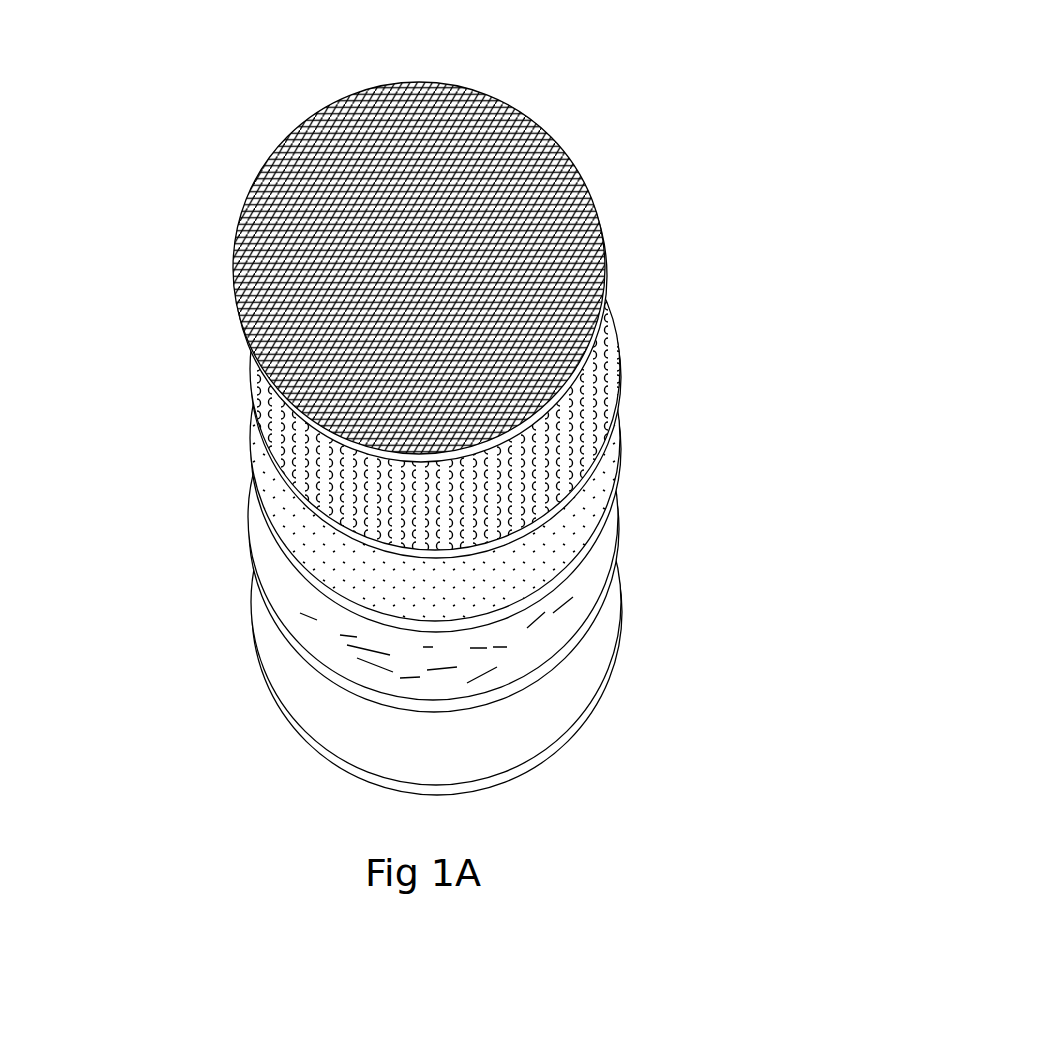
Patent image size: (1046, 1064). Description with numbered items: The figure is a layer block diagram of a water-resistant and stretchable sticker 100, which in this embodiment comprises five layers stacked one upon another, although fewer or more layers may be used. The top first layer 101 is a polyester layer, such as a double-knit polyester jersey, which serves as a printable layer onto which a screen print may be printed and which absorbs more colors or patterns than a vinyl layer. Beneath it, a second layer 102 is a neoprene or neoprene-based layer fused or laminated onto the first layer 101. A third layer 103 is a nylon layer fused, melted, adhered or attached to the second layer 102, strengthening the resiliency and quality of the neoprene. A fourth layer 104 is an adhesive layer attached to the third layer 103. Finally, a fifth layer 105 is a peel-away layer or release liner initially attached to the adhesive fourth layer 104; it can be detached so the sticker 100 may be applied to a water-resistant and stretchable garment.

The water-resistant and stretchable sticker 100 is at (429, 408).
The first layer 101 is at (557, 237).
The second layer 102 is at (561, 424).
The third layer 103 is at (532, 548).
The fourth layer 104 is at (533, 633).
The fifth layer 105 is at (533, 727).